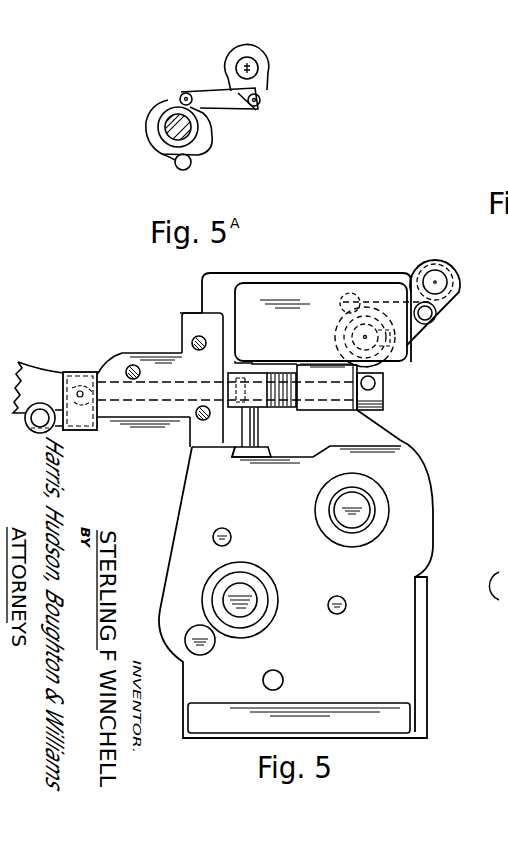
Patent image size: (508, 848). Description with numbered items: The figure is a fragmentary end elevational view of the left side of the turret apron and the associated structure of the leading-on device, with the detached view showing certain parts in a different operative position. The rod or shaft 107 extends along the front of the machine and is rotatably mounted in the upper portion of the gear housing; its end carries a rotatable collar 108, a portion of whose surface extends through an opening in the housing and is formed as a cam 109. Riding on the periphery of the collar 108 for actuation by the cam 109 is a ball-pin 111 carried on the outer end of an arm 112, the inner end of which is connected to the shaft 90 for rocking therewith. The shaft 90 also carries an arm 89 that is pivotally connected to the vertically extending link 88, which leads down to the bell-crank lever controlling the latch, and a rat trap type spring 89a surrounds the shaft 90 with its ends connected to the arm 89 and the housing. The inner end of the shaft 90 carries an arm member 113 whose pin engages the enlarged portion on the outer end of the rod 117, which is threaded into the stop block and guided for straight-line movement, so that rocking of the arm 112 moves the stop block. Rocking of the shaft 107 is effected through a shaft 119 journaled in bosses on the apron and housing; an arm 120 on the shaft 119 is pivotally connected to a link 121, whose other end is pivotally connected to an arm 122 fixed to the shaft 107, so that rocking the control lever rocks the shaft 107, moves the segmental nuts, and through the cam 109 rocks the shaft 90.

In FIG. 5, the link 88 is at (258, 438).
In FIG. 5, the arm 89 is at (260, 370).
In FIG. 5, the rat trap type spring 89a is at (289, 410).
In FIG. 5, the shaft 90 is at (336, 410).
In FIG. 5A, the shaft 107 is at (172, 130).
In FIG. 5, the shaft 107 is at (332, 347).
In FIG. 5A, the collar 108 is at (204, 134).
In FIG. 5A, the cam 109 is at (168, 158).
In FIG. 5, the cam 109 is at (380, 369).
In FIG. 5A, the ball-pin 111 is at (194, 170).
In FIG. 5, the ball-pin 111 is at (378, 386).
In FIG. 5, the arm 112 is at (386, 408).
In FIG. 5, the arm member 113 is at (74, 381).
In FIG. 5, the rod 117 is at (40, 412).
In FIG. 5A, the shaft 119 is at (250, 62).
In FIG. 5, the shaft 119 is at (436, 280).
In FIG. 5A, the arm 120 is at (268, 80).
In FIG. 5, the arm 120 is at (460, 292).
In FIG. 5A, the link 121 is at (212, 98).
In FIG. 5, the link 121 is at (392, 300).
In FIG. 5A, the arm 122 is at (178, 97).
In FIG. 5, the arm 122 is at (343, 320).